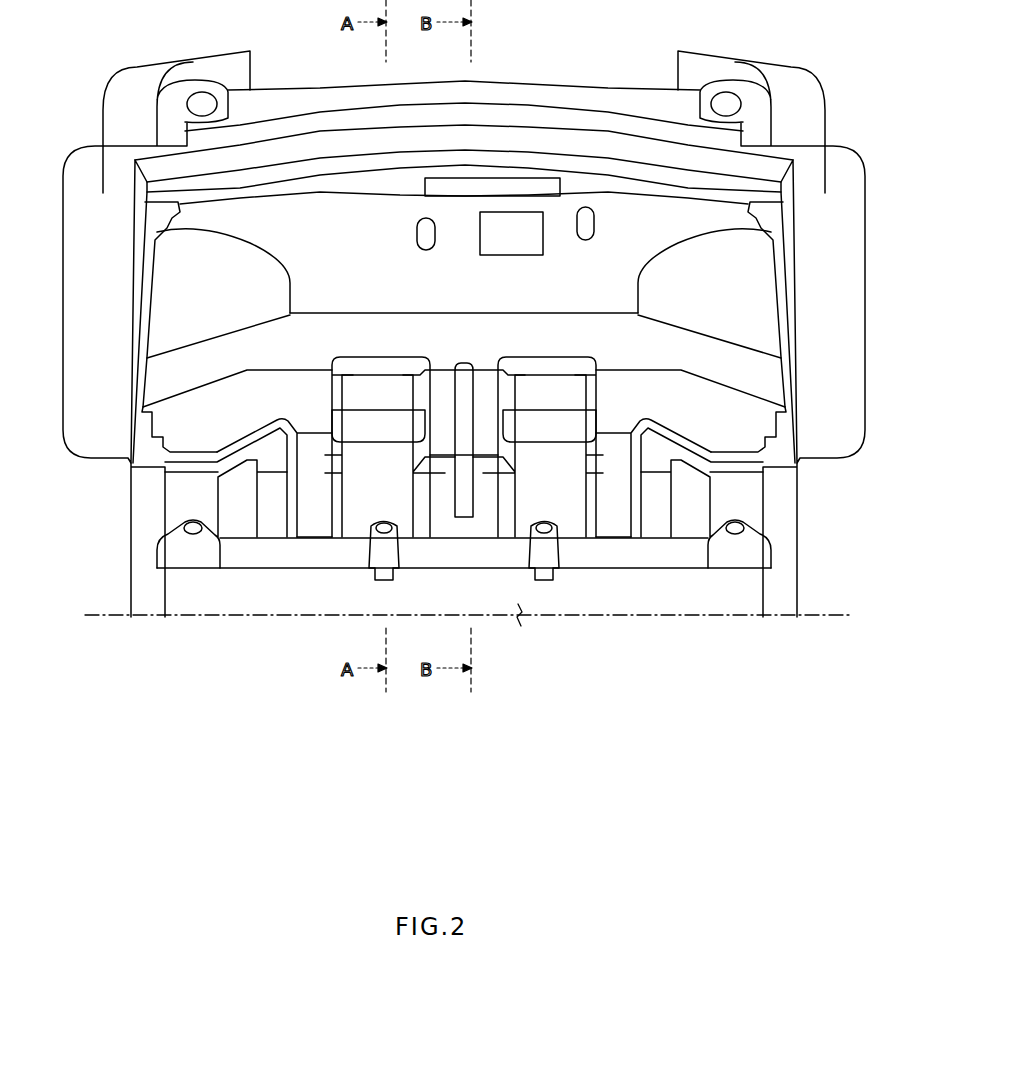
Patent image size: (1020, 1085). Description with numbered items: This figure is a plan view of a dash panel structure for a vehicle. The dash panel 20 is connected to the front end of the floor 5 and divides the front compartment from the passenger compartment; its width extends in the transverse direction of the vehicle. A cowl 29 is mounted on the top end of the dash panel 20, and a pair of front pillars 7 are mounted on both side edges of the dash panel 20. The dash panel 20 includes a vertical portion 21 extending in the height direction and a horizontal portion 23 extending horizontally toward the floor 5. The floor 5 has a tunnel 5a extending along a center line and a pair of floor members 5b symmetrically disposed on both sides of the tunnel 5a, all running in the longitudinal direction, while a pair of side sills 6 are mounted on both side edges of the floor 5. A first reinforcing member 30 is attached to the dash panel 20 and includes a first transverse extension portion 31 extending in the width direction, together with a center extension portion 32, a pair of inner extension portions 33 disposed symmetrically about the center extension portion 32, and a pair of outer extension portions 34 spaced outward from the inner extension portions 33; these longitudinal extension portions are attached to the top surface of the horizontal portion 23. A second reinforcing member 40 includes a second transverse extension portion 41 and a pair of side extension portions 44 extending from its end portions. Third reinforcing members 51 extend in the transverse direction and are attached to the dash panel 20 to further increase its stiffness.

The dash panel 20 is at (492, 74).
The vertical portion 21 is at (402, 197).
The cowl 29 is at (540, 118).
The front pillar 7 is at (128, 378).
The side extension portion 44 is at (198, 358).
The first transverse extension portion 31 is at (312, 373).
The second reinforcing member 40 is at (447, 305).
The second transverse extension portion 41 is at (518, 325).
The outer extension portion 34 is at (200, 438).
The inner extension portion 33 is at (258, 465).
The first reinforcing member 30 is at (268, 446).
The center extension portion 32 is at (490, 437).
The third reinforcing member 51 is at (367, 433).
The horizontal portion 23 is at (400, 465).
The floor 5 is at (720, 507).
The tunnel 5a is at (488, 500).
The floor member 5b is at (318, 517).
The side sill 6 is at (143, 527).